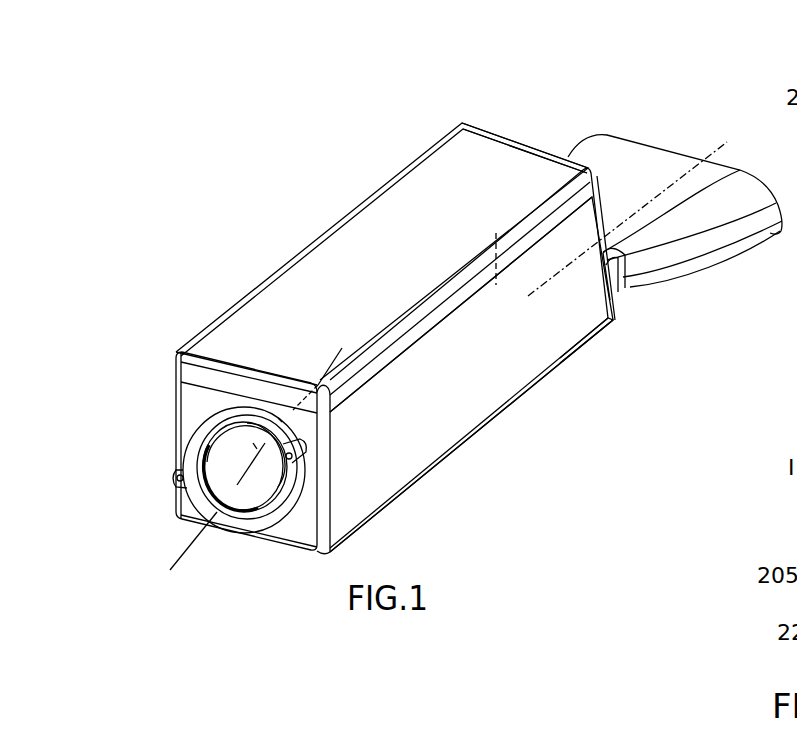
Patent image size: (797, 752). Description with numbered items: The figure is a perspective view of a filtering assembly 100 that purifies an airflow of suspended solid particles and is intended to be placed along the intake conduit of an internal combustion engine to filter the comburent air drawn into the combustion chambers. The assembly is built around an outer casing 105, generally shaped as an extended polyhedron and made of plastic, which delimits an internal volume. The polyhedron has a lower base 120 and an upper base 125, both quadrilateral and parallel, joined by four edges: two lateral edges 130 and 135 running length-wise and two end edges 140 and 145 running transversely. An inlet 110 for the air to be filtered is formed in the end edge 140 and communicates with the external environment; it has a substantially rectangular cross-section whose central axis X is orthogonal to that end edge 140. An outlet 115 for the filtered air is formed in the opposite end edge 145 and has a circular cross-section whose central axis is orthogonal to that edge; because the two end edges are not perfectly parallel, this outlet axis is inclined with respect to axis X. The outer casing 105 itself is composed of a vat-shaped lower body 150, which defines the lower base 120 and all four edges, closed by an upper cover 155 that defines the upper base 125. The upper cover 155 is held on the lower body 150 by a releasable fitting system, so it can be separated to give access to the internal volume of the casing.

The filtering assembly 100 is at (434, 356).
The outer casing 105 is at (487, 447).
The inlet 110 is at (627, 285).
The outlet 115 is at (237, 505).
The lower base 120 is at (430, 483).
The upper base 125 is at (398, 220).
The lateral edge 130 is at (508, 362).
The lateral edge 135 is at (172, 402).
The end edge 140 is at (523, 135).
The end edge 145 is at (305, 535).
The lower body 150 is at (592, 347).
The upper cover 155 is at (237, 302).
The central axis of the inlet X is at (707, 155).